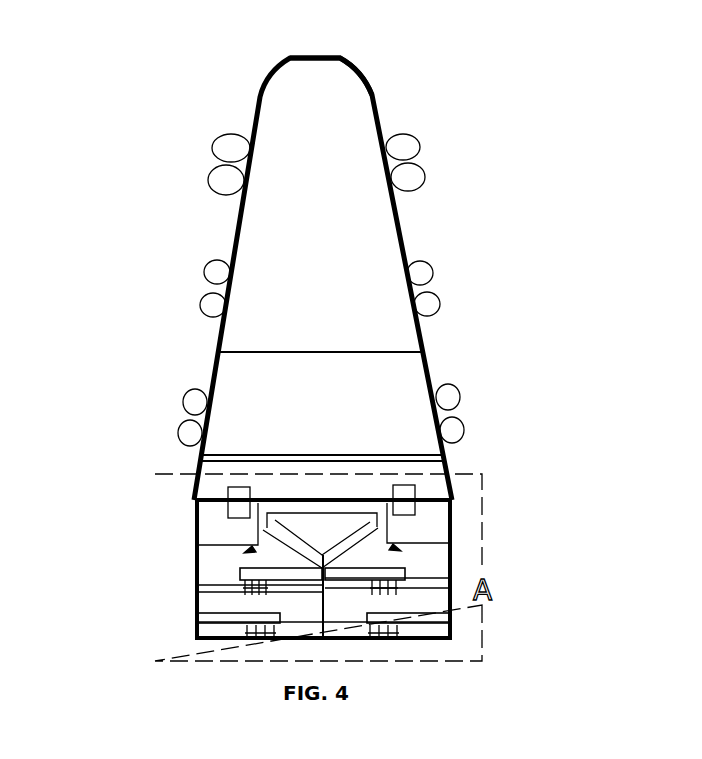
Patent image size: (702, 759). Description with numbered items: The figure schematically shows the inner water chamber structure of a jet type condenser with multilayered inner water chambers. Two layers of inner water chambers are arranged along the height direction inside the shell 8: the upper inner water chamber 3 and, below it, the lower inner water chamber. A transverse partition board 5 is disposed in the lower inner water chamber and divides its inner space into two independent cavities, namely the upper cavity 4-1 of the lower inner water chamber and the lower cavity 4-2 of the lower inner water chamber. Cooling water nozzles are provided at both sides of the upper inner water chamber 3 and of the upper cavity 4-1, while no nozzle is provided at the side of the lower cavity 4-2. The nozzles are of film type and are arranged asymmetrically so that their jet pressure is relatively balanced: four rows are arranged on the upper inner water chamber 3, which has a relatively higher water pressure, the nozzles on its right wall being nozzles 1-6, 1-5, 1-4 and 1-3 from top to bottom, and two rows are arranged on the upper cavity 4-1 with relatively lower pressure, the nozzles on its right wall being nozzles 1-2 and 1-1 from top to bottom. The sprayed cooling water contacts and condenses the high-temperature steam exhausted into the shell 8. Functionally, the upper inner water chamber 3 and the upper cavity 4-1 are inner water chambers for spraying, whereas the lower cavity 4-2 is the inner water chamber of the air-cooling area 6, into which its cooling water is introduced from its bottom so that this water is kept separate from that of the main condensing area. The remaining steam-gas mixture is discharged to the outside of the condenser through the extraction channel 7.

The nozzle 1-1 is at (190, 433).
The nozzle 1-2 is at (197, 400).
The nozzle 1-3 is at (207, 303).
The nozzle 1-4 is at (207, 272).
The nozzle 1-5 is at (222, 178).
The nozzle 1-6 is at (227, 148).
The upper inner water chamber 3 is at (370, 232).
The upper cavity of the lower inner water chamber 4-1 is at (413, 373).
The lower cavity of the lower inner water chamber 4-2 is at (283, 486).
The partition board 5 is at (393, 455).
The air-cooling area 6 is at (347, 608).
The extraction channel 7 is at (333, 535).
The shell 8 is at (350, 63).